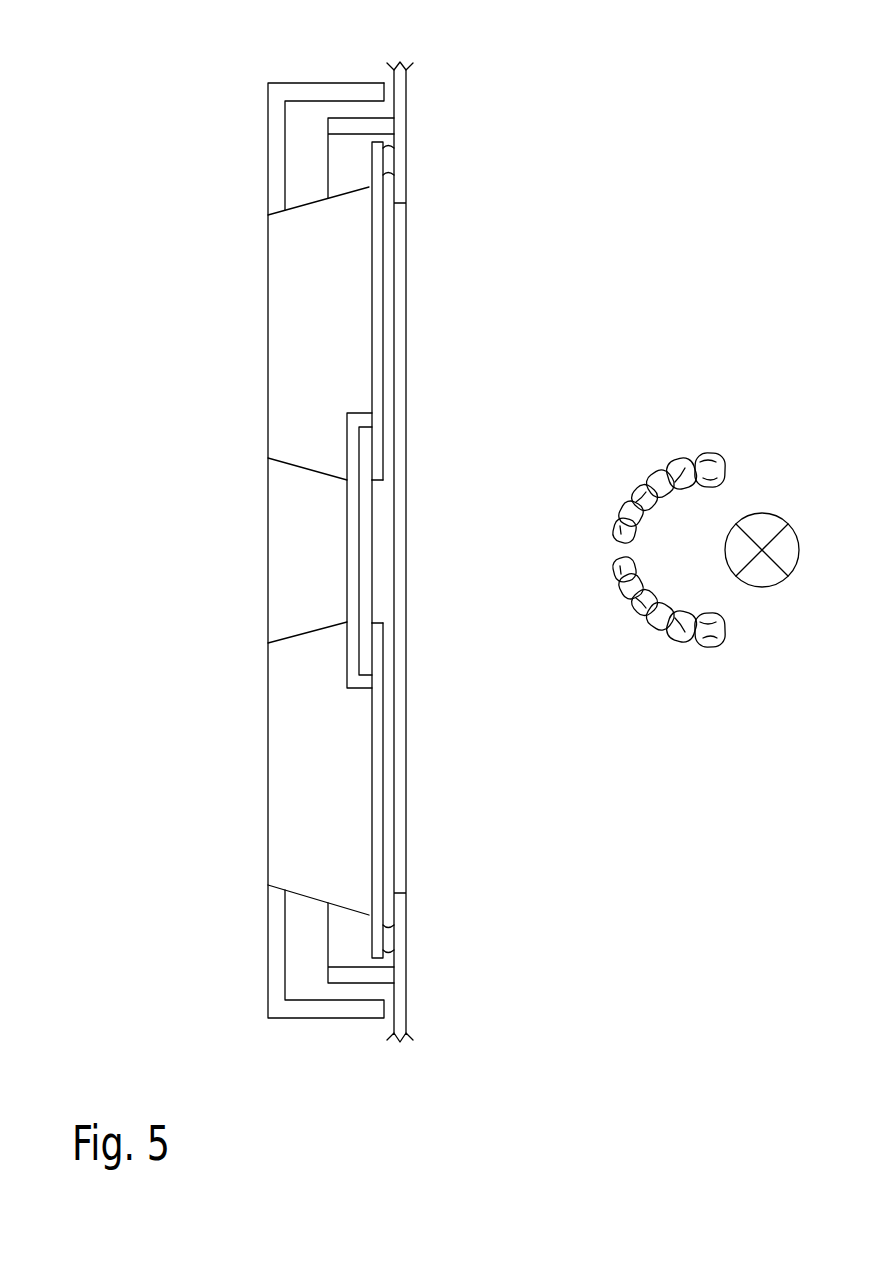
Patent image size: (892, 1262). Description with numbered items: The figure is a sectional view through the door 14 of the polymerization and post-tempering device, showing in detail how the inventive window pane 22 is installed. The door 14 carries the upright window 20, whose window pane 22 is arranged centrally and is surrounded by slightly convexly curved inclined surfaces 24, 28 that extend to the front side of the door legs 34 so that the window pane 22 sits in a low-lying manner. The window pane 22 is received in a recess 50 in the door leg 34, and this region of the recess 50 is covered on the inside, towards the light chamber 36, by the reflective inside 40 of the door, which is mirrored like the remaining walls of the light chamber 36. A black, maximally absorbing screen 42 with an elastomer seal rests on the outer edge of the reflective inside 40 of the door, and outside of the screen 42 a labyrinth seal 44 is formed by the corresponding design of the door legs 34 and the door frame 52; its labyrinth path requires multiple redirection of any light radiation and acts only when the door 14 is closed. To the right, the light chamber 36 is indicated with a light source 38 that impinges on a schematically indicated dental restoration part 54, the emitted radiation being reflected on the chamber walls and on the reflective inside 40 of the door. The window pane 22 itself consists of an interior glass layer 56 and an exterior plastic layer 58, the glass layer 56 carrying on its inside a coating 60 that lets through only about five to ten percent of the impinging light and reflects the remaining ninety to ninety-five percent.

The door 14 is at (182, 754).
The window 20 is at (205, 527).
The window pane 22 is at (360, 570).
The inclined surface 24 is at (292, 465).
The inclined surface 28 is at (291, 635).
The door leg 34 is at (268, 835).
The light chamber 36 is at (566, 452).
The light source 38 is at (762, 530).
The reflective inside of the door 40 is at (377, 798).
The screen 42 is at (386, 167).
The labyrinth seal 44 is at (352, 104).
The recess 50 is at (364, 651).
The door frame 52 is at (400, 998).
The dental restoration part 54 is at (704, 455).
The glass layer 56 is at (365, 532).
The plastic layer 58 is at (355, 554).
The coating 60 is at (376, 497).